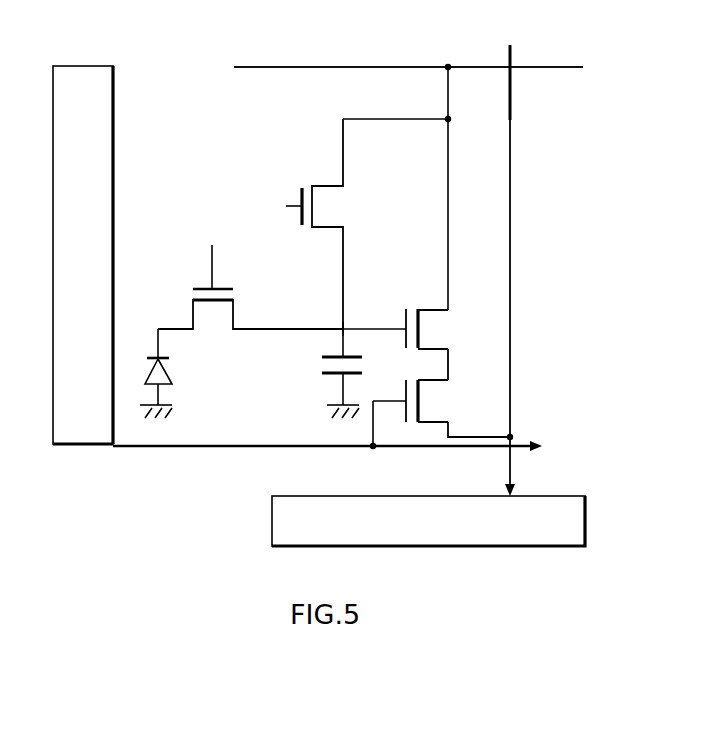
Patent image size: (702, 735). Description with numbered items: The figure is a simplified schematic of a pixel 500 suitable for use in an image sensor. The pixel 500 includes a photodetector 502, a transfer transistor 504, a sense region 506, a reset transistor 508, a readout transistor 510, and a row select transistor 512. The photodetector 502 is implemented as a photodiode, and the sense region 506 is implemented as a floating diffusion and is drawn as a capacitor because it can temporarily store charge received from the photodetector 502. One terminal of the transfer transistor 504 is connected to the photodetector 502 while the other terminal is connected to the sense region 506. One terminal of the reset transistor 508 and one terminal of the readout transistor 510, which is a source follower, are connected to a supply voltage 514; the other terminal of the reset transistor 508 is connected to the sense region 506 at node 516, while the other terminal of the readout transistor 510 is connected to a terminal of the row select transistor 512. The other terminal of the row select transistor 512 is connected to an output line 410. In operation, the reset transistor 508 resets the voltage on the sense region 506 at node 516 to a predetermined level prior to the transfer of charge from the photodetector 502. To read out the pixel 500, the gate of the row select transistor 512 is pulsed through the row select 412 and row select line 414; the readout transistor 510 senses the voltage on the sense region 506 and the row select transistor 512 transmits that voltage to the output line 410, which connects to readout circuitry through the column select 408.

The pixel 500 is at (197, 106).
The supply voltage 514 is at (375, 66).
The reset transistor 508 is at (330, 186).
The transfer transistor 504 is at (215, 260).
The node 516 is at (338, 325).
The readout transistor 510 is at (427, 307).
The photodetector 502 is at (165, 368).
The sense region 506 is at (318, 374).
The output line 410 is at (512, 382).
The row select 412 is at (80, 451).
The row select line 414 is at (150, 451).
The row select transistor 512 is at (432, 424).
The column select 408 is at (272, 521).